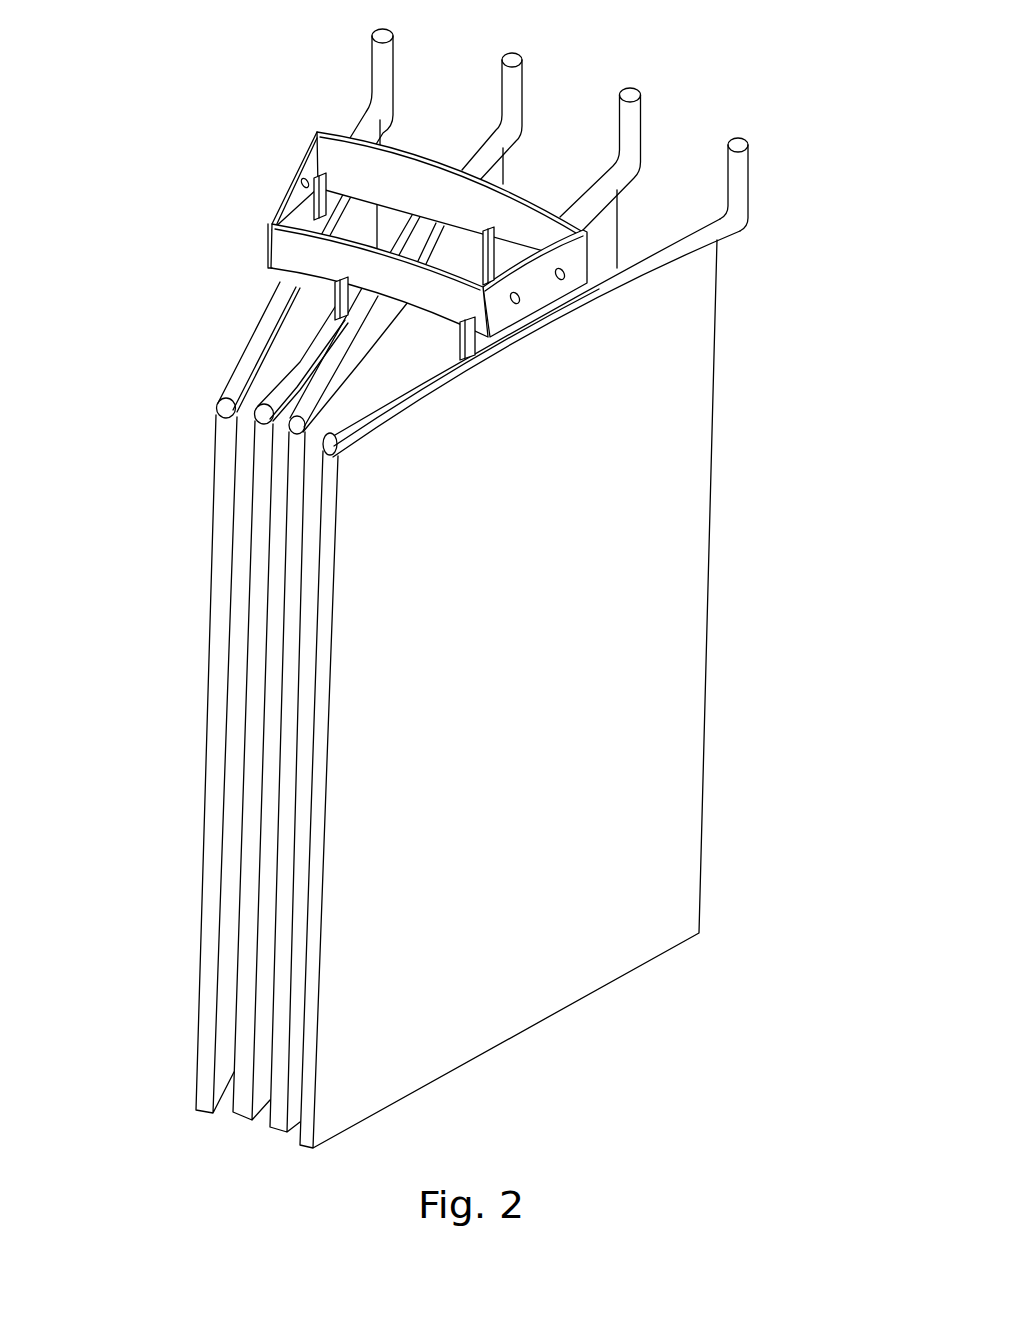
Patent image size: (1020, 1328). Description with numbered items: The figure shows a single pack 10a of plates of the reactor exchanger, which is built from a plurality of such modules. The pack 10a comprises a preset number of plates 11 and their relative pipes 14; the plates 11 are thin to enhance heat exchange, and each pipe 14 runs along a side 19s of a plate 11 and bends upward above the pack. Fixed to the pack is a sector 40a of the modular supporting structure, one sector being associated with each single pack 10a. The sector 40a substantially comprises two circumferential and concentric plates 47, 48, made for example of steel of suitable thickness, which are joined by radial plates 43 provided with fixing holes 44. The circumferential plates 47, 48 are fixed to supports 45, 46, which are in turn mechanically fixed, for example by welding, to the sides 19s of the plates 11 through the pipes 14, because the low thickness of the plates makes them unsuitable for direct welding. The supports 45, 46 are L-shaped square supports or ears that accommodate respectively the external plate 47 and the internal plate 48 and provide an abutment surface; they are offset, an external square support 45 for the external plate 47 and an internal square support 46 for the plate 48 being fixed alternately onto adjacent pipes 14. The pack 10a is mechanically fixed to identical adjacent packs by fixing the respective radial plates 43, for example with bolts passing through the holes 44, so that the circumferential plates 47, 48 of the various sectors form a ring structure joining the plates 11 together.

The pack 10a is at (173, 488).
The plate 11 is at (288, 723).
The pipe 14 is at (617, 173).
The side 19s is at (352, 445).
The sector 40a is at (242, 272).
The radial plate 43 is at (296, 167).
The fixing hole 44 is at (517, 304).
The external square support 45 is at (496, 232).
The internal square support 46 is at (472, 347).
The external circumferential plate 47 is at (398, 165).
The internal circumferential plate 48 is at (282, 250).